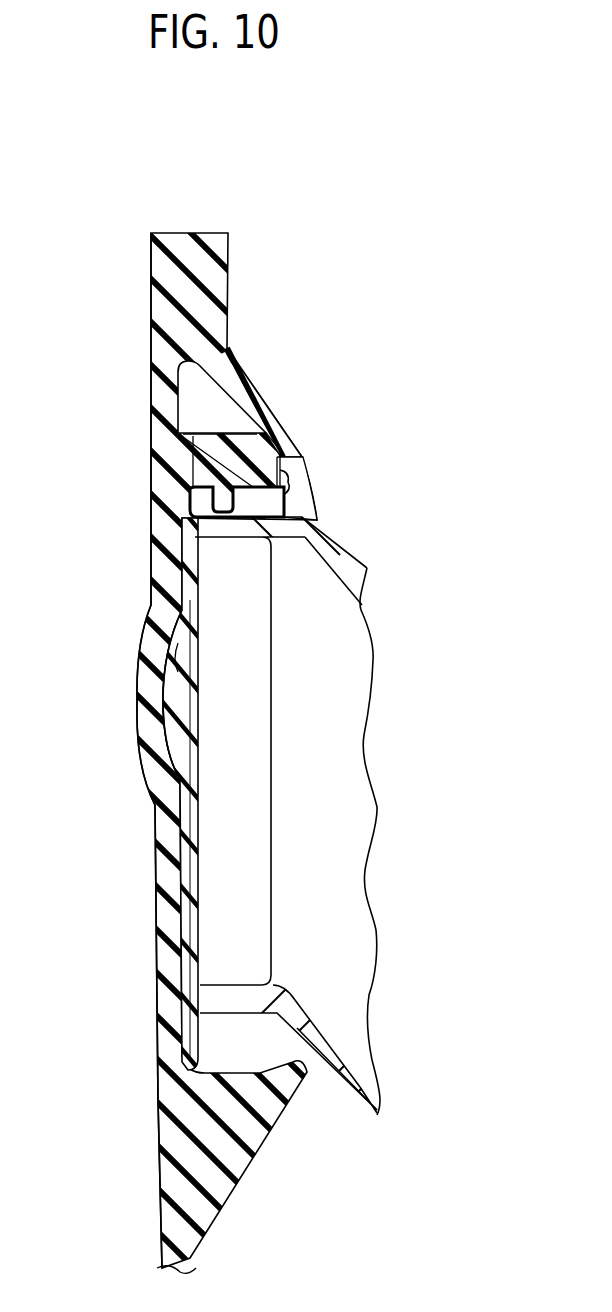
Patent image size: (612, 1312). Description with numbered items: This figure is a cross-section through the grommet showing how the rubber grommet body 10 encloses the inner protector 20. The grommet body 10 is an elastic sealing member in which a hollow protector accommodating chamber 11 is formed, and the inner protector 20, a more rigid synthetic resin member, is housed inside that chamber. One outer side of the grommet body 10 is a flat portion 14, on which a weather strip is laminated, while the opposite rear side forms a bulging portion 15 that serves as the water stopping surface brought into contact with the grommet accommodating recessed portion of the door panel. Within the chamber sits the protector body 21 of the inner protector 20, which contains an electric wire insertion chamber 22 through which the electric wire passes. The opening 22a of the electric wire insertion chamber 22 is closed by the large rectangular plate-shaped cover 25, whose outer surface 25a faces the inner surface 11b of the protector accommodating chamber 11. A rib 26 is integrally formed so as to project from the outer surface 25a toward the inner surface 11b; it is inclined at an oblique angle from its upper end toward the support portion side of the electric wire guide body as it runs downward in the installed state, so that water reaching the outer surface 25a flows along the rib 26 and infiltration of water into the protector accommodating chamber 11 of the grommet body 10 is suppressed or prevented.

The grommet body 10 is at (234, 283).
The protector accommodating chamber 11 is at (238, 384).
The inner surface of the protector accommodating chamber 11b is at (180, 610).
The flat portion 14 is at (157, 932).
The bulging portion 15 is at (284, 418).
The inner protector 20 is at (350, 1098).
The protector body 21 is at (351, 543).
The electric wire insertion chamber 22 is at (252, 725).
The opening of the electric wire insertion chamber 22a is at (215, 537).
The large rectangular plate-shaped cover 25 is at (182, 860).
The outer surface of the large rectangular plate-shaped cover 25a is at (182, 818).
The rib 26 is at (178, 703).